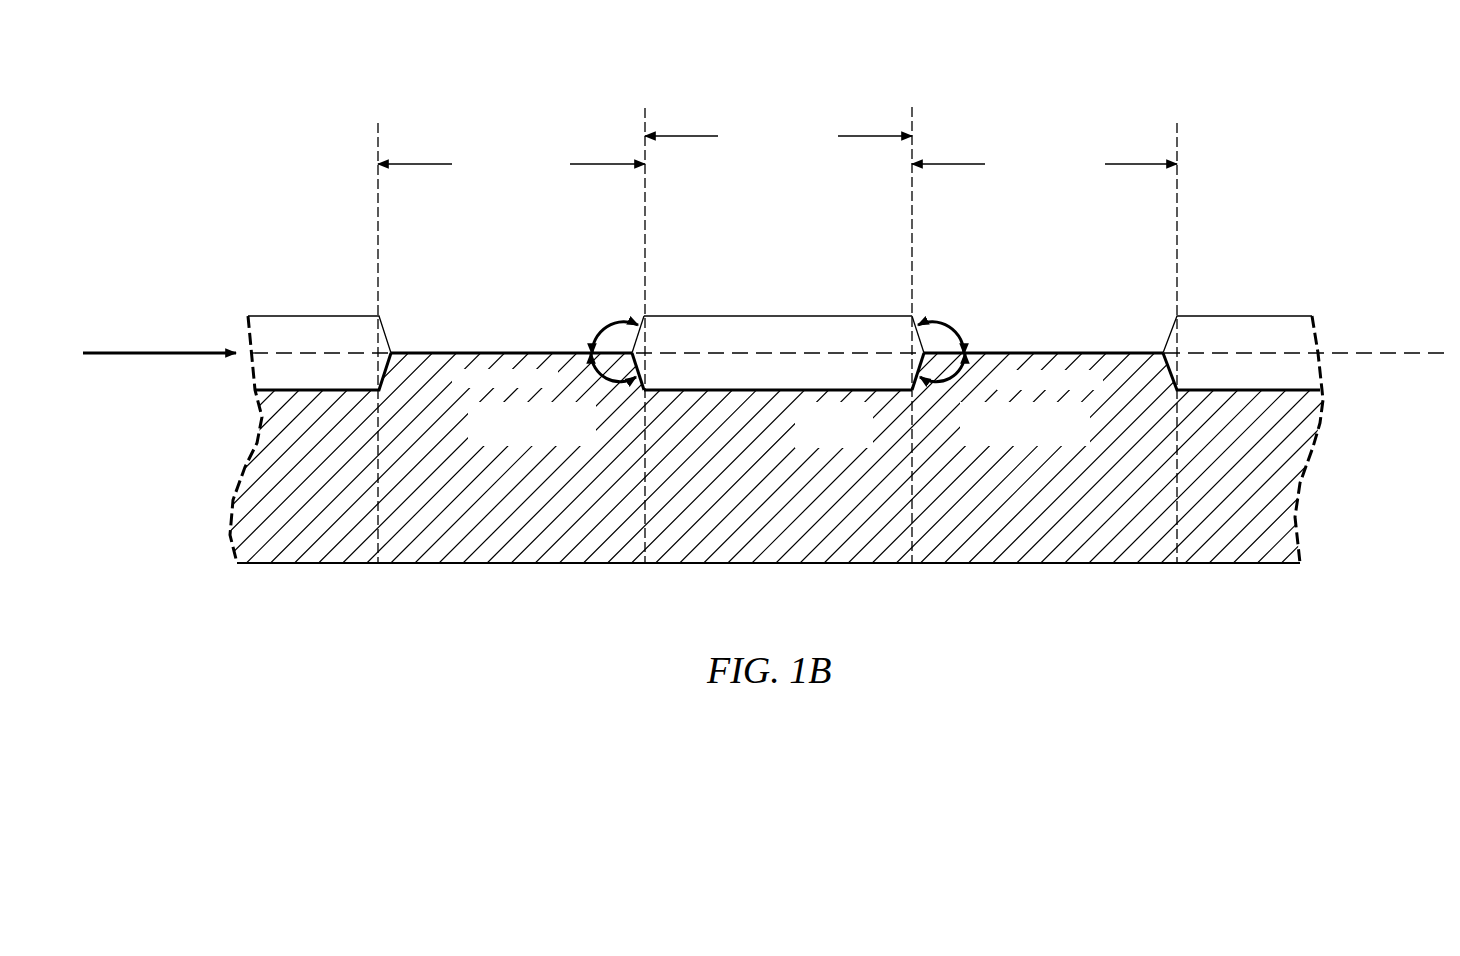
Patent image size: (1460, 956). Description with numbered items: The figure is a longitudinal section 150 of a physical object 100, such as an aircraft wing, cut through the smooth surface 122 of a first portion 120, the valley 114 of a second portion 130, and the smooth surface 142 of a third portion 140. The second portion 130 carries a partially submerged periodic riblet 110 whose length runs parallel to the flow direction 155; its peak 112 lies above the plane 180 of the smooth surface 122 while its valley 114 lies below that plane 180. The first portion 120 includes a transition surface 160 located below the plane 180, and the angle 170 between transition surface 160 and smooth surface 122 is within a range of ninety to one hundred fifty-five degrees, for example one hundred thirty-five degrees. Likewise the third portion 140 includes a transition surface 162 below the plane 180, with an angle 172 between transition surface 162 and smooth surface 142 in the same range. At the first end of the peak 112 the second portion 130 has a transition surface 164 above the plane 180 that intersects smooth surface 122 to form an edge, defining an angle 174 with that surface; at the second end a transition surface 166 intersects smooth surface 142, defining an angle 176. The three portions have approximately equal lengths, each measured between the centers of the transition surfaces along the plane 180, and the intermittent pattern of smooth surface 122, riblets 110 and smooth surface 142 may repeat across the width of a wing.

The physical object 100 is at (1171, 574).
The partially submerged periodic riblet 110 is at (851, 259).
The peak 112 is at (866, 316).
The valley 114 is at (760, 390).
The first portion 120 is at (503, 563).
The smooth surface 122 is at (485, 350).
The second portion 130 is at (775, 563).
The third portion 140 is at (1033, 563).
The smooth surface 142 is at (1121, 351).
The longitudinal section 150 is at (1214, 78).
The flow direction 155 is at (160, 355).
The transition surface 160 is at (639, 376).
The transition surface 162 is at (918, 378).
The transition surface 164 is at (640, 335).
The transition surface 166 is at (918, 334).
The angle 170 is at (596, 372).
The angle 172 is at (960, 373).
The angle 174 is at (598, 338).
The angle 176 is at (958, 331).
The plane 180 is at (1417, 382).